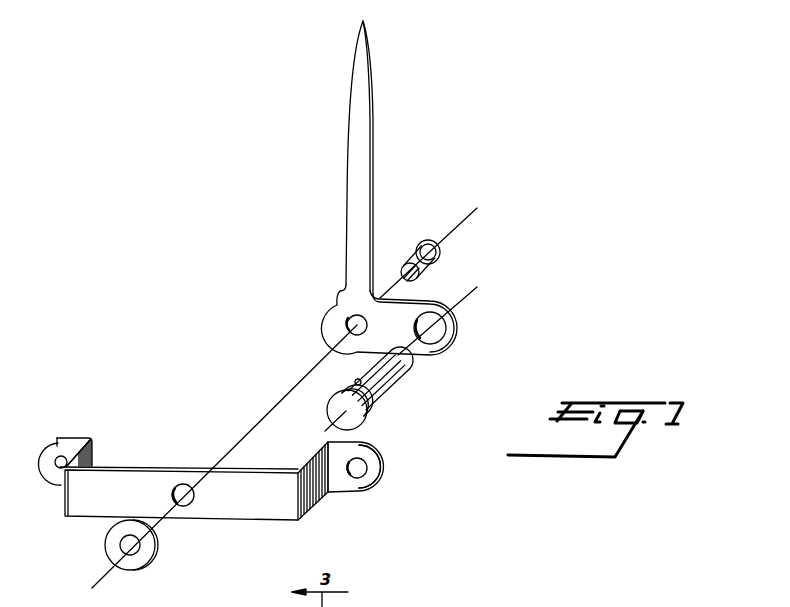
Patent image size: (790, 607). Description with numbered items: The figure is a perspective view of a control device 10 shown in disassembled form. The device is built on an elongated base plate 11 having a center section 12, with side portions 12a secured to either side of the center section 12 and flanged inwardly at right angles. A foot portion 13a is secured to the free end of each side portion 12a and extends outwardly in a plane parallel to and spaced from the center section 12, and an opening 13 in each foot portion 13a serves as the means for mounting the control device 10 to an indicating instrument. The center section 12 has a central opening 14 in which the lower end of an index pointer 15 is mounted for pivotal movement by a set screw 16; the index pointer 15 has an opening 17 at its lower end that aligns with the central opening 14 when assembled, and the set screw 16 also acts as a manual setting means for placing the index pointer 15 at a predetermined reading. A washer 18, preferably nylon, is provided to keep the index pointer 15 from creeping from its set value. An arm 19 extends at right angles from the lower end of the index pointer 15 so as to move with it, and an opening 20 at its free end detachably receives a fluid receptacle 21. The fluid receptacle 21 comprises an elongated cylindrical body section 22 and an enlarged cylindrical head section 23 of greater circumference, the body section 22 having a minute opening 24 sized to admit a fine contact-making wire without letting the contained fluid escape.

The control device 10 is at (333, 508).
The base plate 11 is at (240, 517).
The center section 12 is at (58, 440).
The side portions 12a is at (93, 455).
The opening 13 is at (48, 464).
The foot portion 13a is at (370, 488).
The central opening 14 is at (186, 490).
The index pointer 15 is at (368, 178).
The set screw 16 is at (421, 245).
The opening 17 is at (347, 320).
The washer 18 is at (143, 562).
The arm 19 is at (405, 312).
The opening 20 is at (458, 330).
The fluid receptacle 21 is at (403, 377).
The body section 22 is at (388, 397).
The head section 23 is at (337, 393).
The opening 24 is at (356, 379).